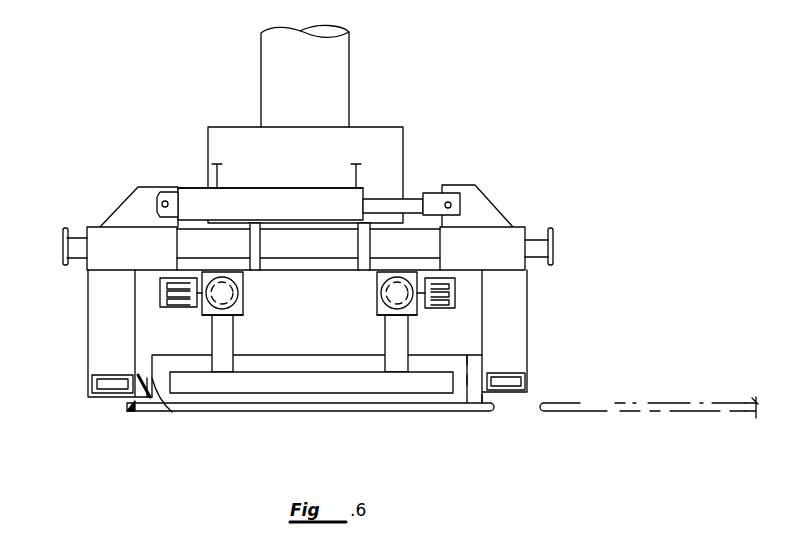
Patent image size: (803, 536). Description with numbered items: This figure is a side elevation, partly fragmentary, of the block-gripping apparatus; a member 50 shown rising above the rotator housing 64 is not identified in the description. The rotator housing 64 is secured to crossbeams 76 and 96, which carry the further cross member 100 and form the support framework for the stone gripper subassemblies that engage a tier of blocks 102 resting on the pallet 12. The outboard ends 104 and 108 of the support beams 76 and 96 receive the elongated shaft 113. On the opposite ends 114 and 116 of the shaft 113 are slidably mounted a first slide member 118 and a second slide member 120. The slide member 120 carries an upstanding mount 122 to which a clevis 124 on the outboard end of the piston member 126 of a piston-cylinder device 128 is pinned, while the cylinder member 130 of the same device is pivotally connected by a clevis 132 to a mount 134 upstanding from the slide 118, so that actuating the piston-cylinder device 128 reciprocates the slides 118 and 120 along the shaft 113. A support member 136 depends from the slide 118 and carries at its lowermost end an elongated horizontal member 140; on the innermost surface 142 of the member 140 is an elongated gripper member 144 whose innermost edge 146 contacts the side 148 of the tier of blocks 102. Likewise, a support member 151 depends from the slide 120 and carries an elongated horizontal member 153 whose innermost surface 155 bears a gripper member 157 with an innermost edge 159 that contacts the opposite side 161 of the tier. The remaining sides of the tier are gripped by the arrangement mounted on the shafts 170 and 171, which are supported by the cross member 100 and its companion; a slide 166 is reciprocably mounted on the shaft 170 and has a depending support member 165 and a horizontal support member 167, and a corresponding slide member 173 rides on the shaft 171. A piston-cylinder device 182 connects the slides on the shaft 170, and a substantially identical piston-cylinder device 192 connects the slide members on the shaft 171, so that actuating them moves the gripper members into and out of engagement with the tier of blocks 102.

The pallet 12 is at (682, 410).
The support column 50 is at (340, 58).
The rotator housing 64 is at (380, 126).
The crossbeam 76 is at (274, 222).
The crossbeam 96 is at (355, 226).
The cross member 100 is at (309, 361).
The tier of blocks 102 is at (415, 353).
The outboard end 104 is at (247, 243).
The outboard end 108 is at (360, 243).
The elongated shaft 113 is at (418, 244).
The shaft end 114 is at (73, 245).
The shaft end 116 is at (530, 233).
The first slide member 118 is at (100, 227).
The second slide member 120 is at (517, 225).
The upstanding mount 122 is at (475, 207).
The clevis 124 is at (432, 193).
The piston member 126 is at (380, 198).
The piston-cylinder device 128 is at (285, 188).
The cylinder member 130 is at (227, 200).
The clevis 132 is at (165, 191).
The mount 134 is at (130, 187).
The support member 136 is at (103, 320).
The elongated horizontal member 140 is at (92, 382).
The innermost surface 142 is at (128, 408).
The elongated gripper member 144 is at (139, 376).
The innermost edge 146 is at (172, 412).
The side of tier 148 is at (147, 378).
The support member 151 is at (510, 307).
The elongated horizontal member 153 is at (527, 378).
The innermost surface 155 is at (492, 381).
The elongated gripper member 157 is at (472, 390).
The innermost edge 159 is at (477, 375).
The side of tier 161 is at (473, 373).
The depending support member 165 is at (225, 333).
The slide 166 is at (245, 305).
The horizontal support member 167 is at (227, 385).
The shaft 170 is at (243, 285).
The shaft 171 is at (376, 285).
The slide member 173 is at (376, 303).
The piston-cylinder device 182 is at (160, 290).
The piston-cylinder device 192 is at (456, 287).